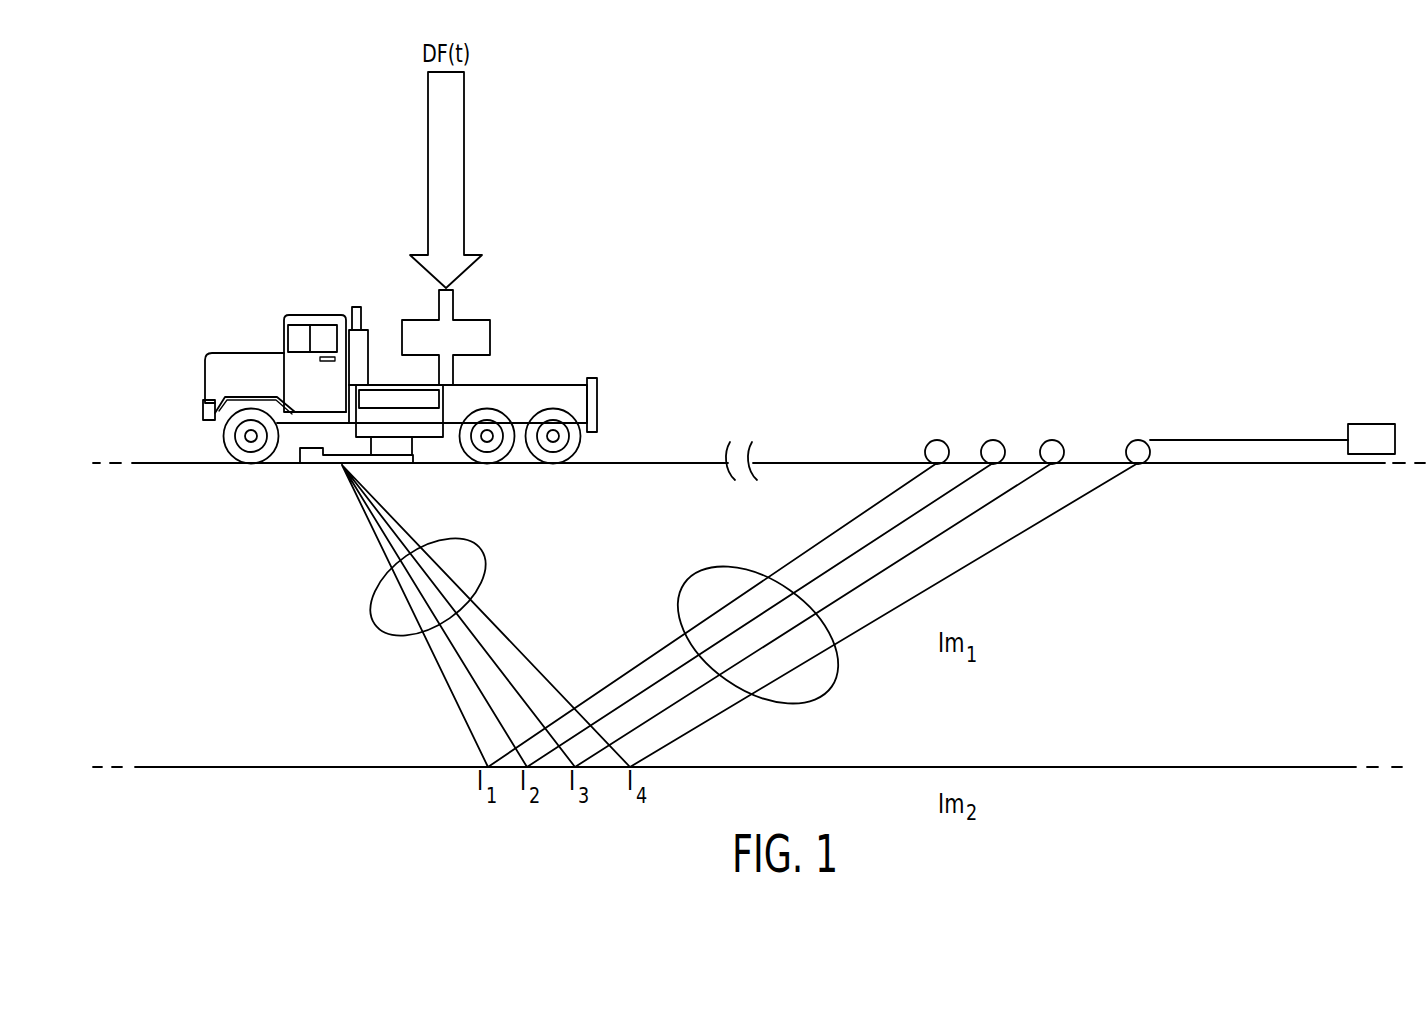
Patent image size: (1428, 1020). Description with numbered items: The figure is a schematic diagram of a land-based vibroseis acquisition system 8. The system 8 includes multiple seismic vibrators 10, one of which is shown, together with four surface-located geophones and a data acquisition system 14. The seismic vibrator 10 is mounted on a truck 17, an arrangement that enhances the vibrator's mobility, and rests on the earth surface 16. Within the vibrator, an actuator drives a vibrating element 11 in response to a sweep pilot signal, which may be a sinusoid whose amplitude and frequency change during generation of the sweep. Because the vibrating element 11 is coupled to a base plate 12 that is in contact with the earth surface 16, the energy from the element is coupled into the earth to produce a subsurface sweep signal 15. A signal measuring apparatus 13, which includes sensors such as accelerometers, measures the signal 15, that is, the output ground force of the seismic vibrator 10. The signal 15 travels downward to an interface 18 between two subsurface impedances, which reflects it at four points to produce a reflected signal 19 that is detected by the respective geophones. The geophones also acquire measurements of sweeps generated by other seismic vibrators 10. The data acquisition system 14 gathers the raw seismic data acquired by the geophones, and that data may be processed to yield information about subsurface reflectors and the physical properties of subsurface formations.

The vibroseis acquisition system 8 is at (1045, 340).
The seismic vibrator 10 is at (213, 320).
The vibrating element 11 is at (473, 320).
The base plate 12 is at (322, 464).
The signal measuring apparatus 13 is at (390, 440).
The data acquisition system 14 is at (1372, 424).
The subsurface sweep signal 15 is at (378, 623).
The earth surface 16 is at (178, 463).
The truck 17 is at (315, 315).
The interface 18 is at (1198, 767).
The reflected signal 19 is at (825, 690).